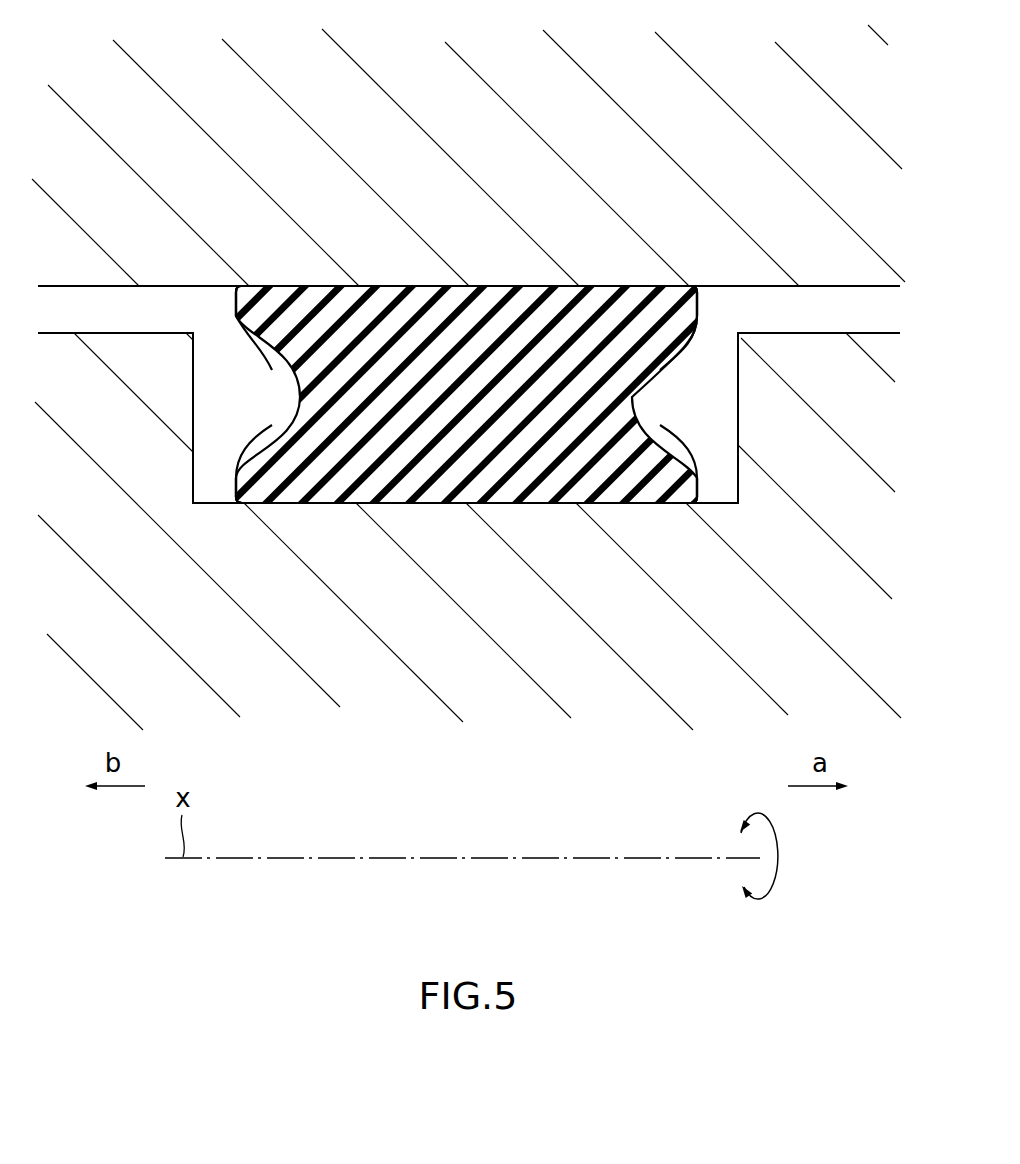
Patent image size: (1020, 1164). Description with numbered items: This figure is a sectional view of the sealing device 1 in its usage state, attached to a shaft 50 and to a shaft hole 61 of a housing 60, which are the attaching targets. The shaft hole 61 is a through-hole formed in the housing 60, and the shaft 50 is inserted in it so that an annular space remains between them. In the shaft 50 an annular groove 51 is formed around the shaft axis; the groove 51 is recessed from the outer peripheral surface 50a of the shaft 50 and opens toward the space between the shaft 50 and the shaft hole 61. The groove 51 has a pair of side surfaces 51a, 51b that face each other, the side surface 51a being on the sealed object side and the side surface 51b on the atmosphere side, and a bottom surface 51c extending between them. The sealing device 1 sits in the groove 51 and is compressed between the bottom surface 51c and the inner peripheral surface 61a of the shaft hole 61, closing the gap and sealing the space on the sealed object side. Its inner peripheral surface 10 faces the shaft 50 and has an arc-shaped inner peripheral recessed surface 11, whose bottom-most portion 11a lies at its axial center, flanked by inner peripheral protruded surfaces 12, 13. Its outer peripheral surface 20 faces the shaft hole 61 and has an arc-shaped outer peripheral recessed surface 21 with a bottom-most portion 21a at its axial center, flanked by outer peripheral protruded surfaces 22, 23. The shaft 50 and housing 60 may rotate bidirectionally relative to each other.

The sealing device 1 is at (222, 307).
The inner peripheral surface 10 is at (522, 522).
The inner peripheral recessed surface 11 is at (428, 507).
The bottom-most portion 11a is at (468, 505).
The inner peripheral protruded surface 12 is at (690, 504).
The inner peripheral protruded surface 13 is at (254, 505).
The outer peripheral surface 20 is at (508, 268).
The outer peripheral recessed surface 21 is at (413, 281).
The bottom-most portion 21a is at (464, 285).
The outer peripheral protruded surface 22 is at (679, 285).
The outer peripheral protruded surface 23 is at (241, 286).
The shaft 50 is at (214, 655).
The outer peripheral surface of the shaft 50a is at (118, 333).
The groove 51 is at (720, 434).
The side surface 51a is at (738, 405).
The side surface 51b is at (192, 439).
The bottom surface 51c is at (613, 499).
The housing 60 is at (552, 92).
The shaft hole 61 is at (822, 303).
The inner peripheral surface of the shaft hole 61a is at (728, 290).